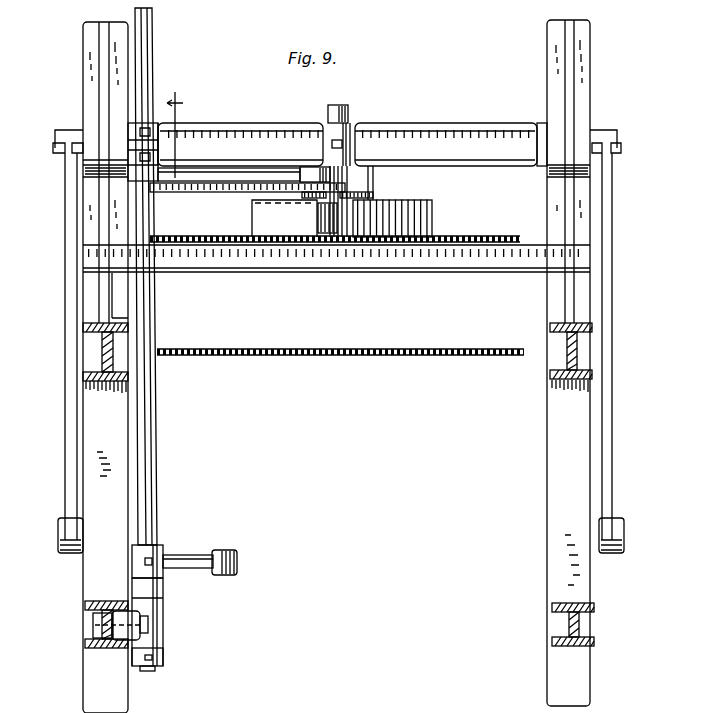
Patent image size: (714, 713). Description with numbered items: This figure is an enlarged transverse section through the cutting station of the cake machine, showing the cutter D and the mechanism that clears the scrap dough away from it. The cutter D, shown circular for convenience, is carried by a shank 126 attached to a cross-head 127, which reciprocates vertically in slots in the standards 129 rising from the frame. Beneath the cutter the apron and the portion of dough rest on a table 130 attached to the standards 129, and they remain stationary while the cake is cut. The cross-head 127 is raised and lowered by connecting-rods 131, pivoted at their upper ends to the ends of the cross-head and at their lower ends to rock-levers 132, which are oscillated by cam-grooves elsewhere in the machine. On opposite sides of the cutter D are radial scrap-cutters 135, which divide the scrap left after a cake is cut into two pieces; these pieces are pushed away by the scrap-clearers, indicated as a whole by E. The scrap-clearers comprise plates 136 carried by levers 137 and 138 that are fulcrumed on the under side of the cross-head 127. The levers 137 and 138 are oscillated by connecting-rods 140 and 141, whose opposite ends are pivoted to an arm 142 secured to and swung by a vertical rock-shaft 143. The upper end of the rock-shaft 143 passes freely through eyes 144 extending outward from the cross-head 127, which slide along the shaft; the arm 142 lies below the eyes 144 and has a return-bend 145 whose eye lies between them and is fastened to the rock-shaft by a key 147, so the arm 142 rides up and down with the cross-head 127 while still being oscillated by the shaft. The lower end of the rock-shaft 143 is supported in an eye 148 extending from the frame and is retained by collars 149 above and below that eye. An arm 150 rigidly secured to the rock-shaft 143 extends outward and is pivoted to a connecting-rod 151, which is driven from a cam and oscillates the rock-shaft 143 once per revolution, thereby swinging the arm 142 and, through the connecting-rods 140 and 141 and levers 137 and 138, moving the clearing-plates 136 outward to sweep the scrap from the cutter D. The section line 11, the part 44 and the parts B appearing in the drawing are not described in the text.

The section line 11 is at (179, 92).
The rail 44 is at (498, 238).
The shank 126 is at (348, 110).
The cross-head 127 is at (468, 126).
The standards 129 is at (90, 91).
The table 130 is at (462, 247).
The connecting-rods 131 is at (68, 265).
The rock-levers 132 is at (60, 530).
The radial scrap-cutters 135 is at (330, 240).
The scrap-clearing plates 136 is at (320, 216).
The lever 137 is at (272, 188).
The lever 138 is at (378, 198).
The connecting-rod 140 is at (217, 193).
The connecting-rod 141 is at (286, 186).
The arm 142 is at (160, 178).
The rock-shaft 143 is at (155, 484).
The eyes 144 is at (158, 126).
The return-bend 145 is at (135, 145).
The key 147 is at (105, 165).
The eye 148 is at (162, 633).
The collars 149 is at (162, 591).
The arm 150 is at (190, 558).
The connecting-rod 151 is at (235, 553).
The I-beam bracket B is at (112, 345).
The cutter D is at (403, 218).
The scrap-clearers E is at (305, 224).